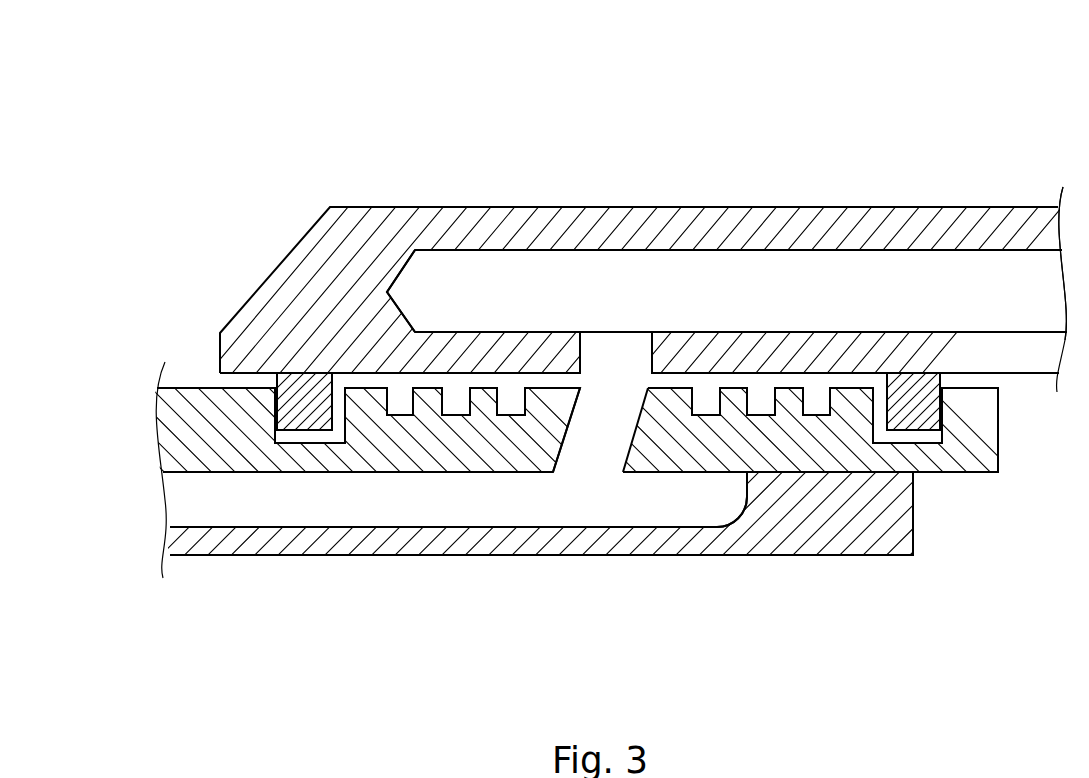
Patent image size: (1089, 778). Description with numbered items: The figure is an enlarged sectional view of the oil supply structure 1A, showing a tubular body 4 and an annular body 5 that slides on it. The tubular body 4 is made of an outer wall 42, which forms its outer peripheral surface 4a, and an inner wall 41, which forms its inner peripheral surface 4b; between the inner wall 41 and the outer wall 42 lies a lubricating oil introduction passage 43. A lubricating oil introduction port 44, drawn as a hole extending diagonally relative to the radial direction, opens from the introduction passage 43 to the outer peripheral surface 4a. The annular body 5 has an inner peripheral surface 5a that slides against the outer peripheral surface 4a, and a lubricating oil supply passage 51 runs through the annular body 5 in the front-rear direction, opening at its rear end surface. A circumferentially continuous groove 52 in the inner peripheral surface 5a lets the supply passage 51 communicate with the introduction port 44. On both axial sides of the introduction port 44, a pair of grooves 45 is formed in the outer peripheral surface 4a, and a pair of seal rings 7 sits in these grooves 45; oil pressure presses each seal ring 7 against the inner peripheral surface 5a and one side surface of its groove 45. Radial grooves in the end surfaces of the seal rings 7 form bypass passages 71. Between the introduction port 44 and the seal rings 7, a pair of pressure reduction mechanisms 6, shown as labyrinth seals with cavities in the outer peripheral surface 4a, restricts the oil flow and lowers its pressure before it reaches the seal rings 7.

The oil supply structure 1A is at (864, 124).
The tubular body 4 is at (794, 567).
The outer peripheral surface 4a is at (190, 388).
The inner peripheral surface 4b is at (592, 555).
The inner wall 41 is at (872, 522).
The outer wall 42 is at (697, 452).
The lubricating oil introduction passage 43 is at (454, 511).
The lubricating oil introduction port 44 is at (577, 437).
The grooves 45 is at (307, 440).
The annular body 5 is at (523, 218).
The inner peripheral surface 5a is at (250, 376).
The lubricating oil supply passage 51 is at (679, 269).
The groove 52 is at (594, 353).
The pressure reduction mechanisms 6 is at (464, 373).
The seal rings 7 is at (322, 388).
The bypass passages 71 is at (299, 405).